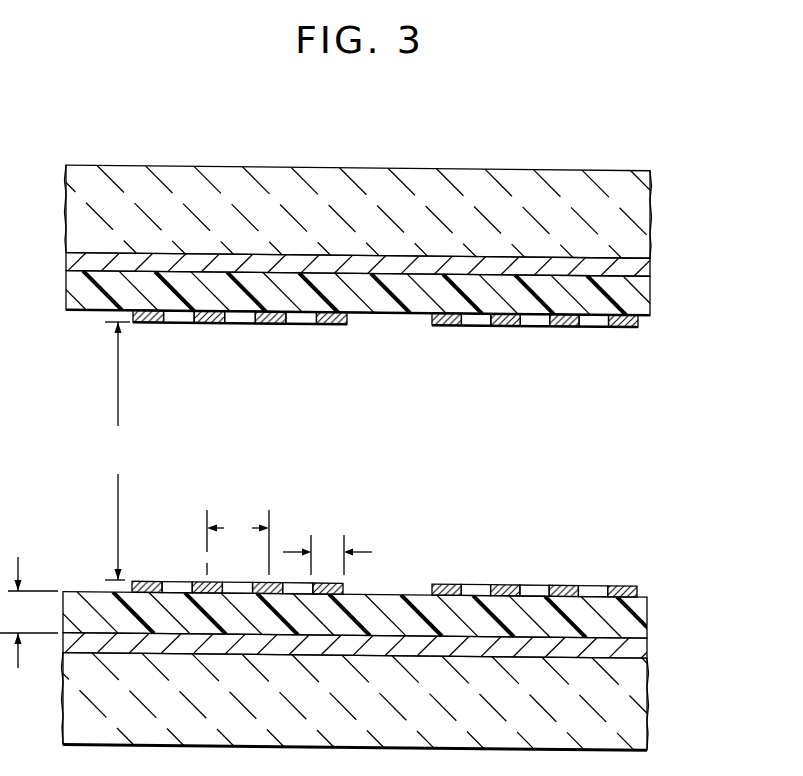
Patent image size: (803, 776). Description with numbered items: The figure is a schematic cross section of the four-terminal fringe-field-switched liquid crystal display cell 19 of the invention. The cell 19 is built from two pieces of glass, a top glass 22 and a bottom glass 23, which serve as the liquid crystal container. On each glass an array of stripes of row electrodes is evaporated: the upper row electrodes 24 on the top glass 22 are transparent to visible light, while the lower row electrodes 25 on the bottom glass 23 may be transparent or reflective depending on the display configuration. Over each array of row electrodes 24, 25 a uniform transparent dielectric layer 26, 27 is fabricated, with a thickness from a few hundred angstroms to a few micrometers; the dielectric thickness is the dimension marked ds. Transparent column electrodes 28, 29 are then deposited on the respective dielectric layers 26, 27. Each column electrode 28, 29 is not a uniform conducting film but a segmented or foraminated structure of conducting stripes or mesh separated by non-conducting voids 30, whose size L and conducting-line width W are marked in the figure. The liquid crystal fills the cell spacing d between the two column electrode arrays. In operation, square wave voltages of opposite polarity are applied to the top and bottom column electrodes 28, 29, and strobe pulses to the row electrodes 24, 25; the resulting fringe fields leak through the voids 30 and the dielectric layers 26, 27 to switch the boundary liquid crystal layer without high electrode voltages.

The FFSLCD cell 19 is at (148, 140).
The top glass 22 is at (632, 216).
The bottom glass 23 is at (632, 707).
The top row electrode 24 is at (640, 268).
The bottom row electrode 25 is at (627, 651).
The upper dielectric layer 26 is at (632, 302).
The lower dielectric layer 27 is at (635, 612).
The top column electrode 28 is at (347, 324).
The bottom column electrode 29 is at (348, 591).
The non-conducting voids 30 is at (180, 323).